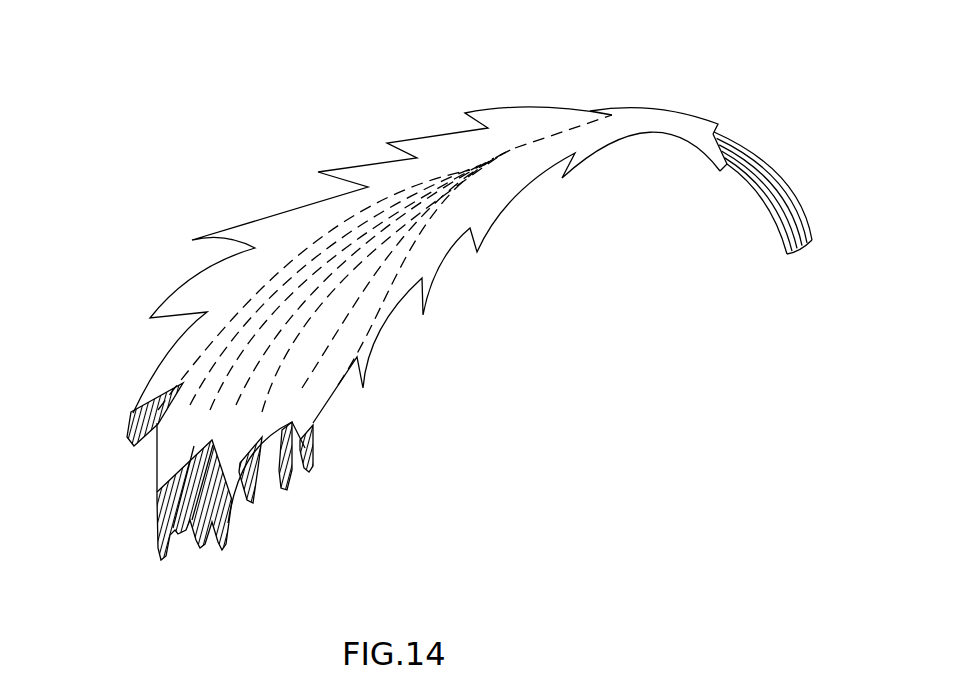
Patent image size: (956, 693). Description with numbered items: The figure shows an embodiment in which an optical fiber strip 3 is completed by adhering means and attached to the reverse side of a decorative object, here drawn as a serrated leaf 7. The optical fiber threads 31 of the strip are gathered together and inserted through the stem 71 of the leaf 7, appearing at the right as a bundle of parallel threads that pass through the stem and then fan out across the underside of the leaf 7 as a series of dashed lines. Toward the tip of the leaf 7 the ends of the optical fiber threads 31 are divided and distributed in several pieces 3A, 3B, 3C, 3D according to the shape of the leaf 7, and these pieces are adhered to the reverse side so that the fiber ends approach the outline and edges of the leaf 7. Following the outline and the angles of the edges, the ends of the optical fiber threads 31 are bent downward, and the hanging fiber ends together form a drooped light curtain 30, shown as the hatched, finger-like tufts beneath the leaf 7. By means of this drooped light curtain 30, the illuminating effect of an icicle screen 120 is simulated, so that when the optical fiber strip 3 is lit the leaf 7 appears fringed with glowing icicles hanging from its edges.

The optical fiber strip 3 is at (267, 282).
The leaf 7 is at (425, 241).
The stem 71 is at (575, 125).
The optical fiber threads 31 is at (771, 182).
The light curtain 30 is at (303, 460).
The piece 3A is at (167, 448).
The piece 3B is at (207, 498).
The piece 3C is at (230, 440).
The piece 3D is at (272, 425).
The icicle screen 120 is at (155, 530).